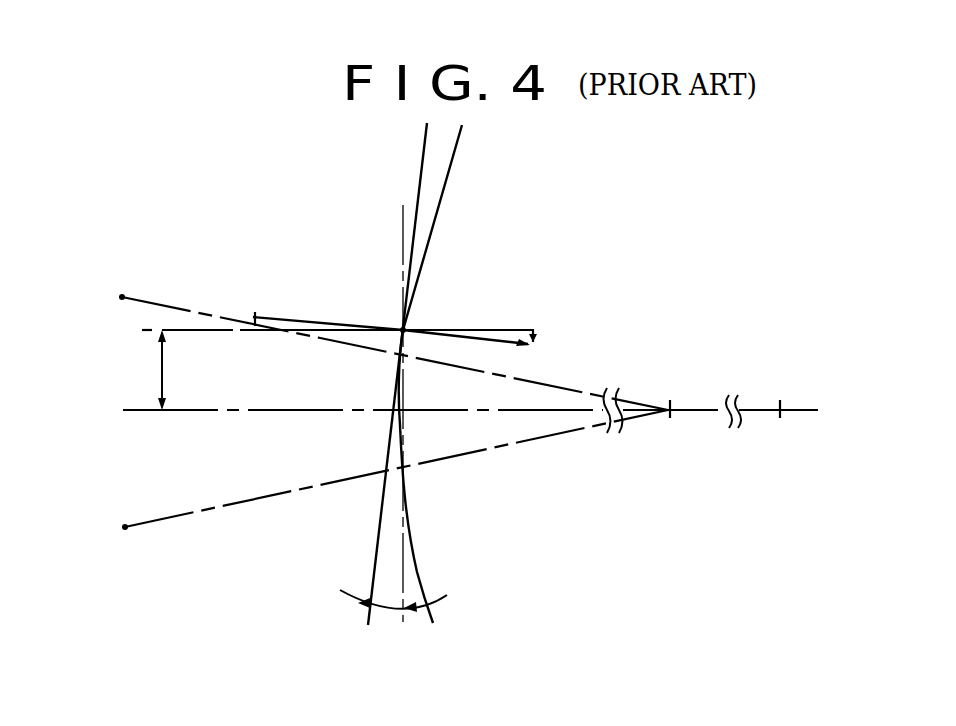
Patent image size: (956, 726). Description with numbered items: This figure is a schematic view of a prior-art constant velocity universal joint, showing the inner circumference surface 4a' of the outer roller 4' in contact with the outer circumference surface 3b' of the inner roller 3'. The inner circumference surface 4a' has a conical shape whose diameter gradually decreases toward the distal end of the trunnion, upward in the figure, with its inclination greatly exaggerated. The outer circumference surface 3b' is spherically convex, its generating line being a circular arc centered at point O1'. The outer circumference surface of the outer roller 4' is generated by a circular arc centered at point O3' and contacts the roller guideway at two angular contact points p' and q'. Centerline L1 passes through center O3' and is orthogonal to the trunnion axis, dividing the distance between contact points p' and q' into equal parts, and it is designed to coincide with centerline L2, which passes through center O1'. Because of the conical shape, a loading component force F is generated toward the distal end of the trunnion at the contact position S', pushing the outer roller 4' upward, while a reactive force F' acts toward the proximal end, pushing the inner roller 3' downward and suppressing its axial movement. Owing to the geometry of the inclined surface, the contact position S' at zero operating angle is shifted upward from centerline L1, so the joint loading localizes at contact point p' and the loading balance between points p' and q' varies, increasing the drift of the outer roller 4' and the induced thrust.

The outer roller 4' is at (332, 374).
The inner circumference surface 4a' is at (392, 374).
The inner roller 3' is at (485, 374).
The outer circumference surface 3b' is at (447, 374).
The contact position S' is at (384, 293).
The loading component force F is at (312, 294).
The reactive force F' is at (501, 355).
The angular contact point p' is at (379, 336).
The angular contact point q' is at (379, 473).
The center of the outer circumference surface of the outer roller O3' is at (656, 443).
The center of the outer circumference surface of the inner roller O1' is at (771, 443).
The centerline L1 is at (467, 408).
The centerline L2 is at (467, 424).